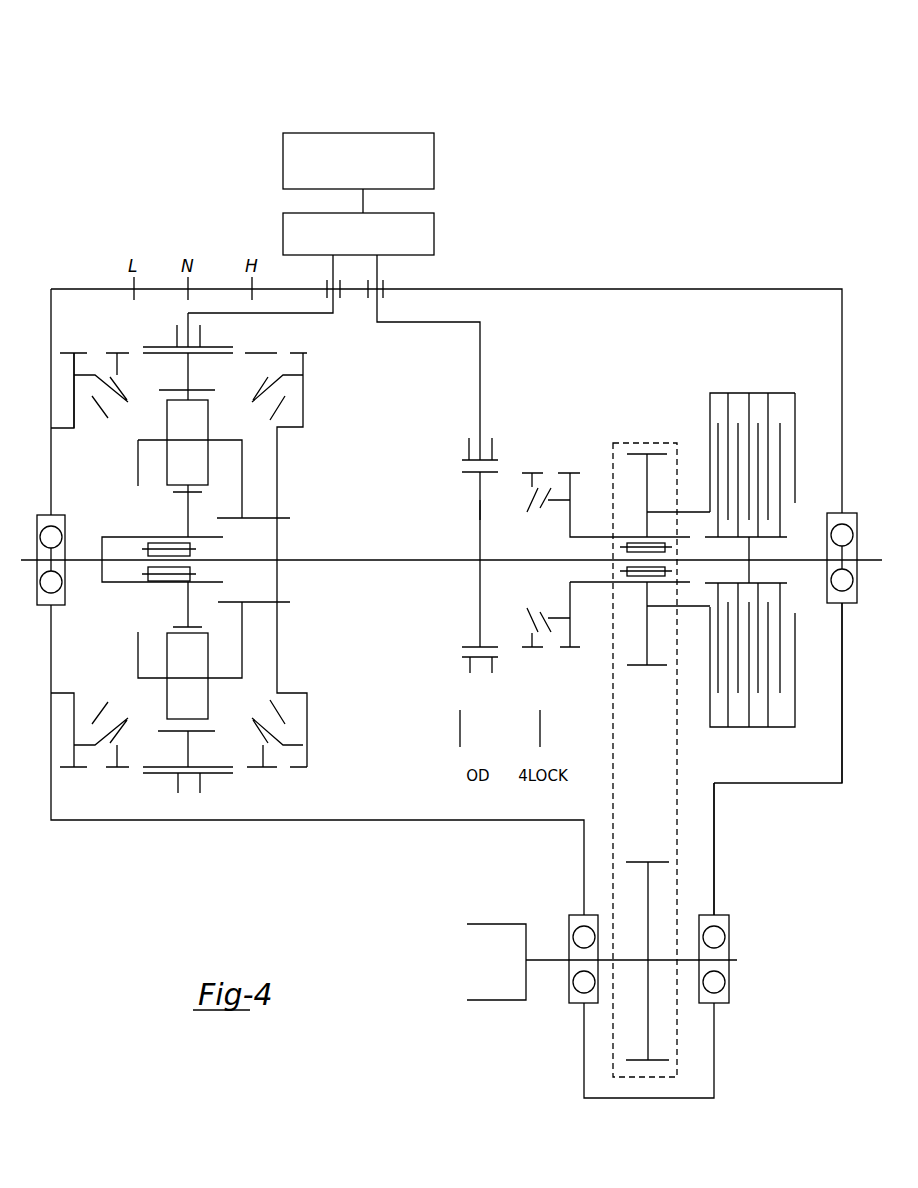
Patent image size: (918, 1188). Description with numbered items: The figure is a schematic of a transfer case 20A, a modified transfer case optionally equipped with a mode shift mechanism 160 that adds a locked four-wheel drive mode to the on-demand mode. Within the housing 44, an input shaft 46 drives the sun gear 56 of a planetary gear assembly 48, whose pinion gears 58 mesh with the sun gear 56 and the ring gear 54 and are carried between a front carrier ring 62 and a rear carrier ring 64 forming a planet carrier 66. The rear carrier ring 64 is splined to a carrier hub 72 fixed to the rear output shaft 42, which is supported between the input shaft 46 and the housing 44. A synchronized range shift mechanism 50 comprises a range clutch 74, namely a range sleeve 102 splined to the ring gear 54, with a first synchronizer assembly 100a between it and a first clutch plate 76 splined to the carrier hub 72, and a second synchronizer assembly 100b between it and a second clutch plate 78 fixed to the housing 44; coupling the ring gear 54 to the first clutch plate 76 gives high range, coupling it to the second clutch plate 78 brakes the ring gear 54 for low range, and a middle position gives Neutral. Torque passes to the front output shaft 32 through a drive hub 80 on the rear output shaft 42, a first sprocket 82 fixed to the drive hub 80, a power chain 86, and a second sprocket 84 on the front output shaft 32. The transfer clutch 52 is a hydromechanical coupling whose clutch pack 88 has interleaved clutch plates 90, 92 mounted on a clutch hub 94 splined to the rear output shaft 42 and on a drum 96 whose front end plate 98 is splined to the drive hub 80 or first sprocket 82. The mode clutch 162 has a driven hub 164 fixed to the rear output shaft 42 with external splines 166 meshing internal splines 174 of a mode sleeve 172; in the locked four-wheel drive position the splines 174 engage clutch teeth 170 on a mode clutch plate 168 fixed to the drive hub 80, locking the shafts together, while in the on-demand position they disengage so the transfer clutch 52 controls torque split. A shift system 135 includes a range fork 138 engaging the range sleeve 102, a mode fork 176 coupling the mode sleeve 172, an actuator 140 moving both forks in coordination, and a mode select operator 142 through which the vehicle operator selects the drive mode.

The transfer case 20A is at (638, 200).
The front output shaft 32 is at (550, 960).
The rear output shaft 42 is at (875, 558).
The housing 44 is at (770, 289).
The input shaft 46 is at (90, 562).
The planetary gear assembly 48 is at (135, 410).
The synchronized range shift mechanism 50 is at (106, 327).
The transfer clutch 52 is at (742, 378).
The ring gear 54 is at (205, 357).
The sun gear 56 is at (188, 510).
The pinion gears 58 is at (190, 425).
The front carrier ring 62 is at (138, 487).
The rear carrier ring 64 is at (240, 462).
The planet carrier 66 is at (135, 448).
The carrier hub 72 is at (277, 522).
The range clutch 74 is at (217, 340).
The first clutch plate 76 is at (277, 455).
The second clutch plate 78 is at (72, 367).
The drive hub 80 is at (588, 505).
The first sprocket 82 is at (647, 485).
The second sprocket 84 is at (648, 900).
The power chain 86 is at (678, 817).
The clutch pack 88 is at (740, 713).
The clutch plates 90 is at (780, 440).
The clutch plates 92 is at (754, 835).
The clutch hub 94 is at (861, 651).
The drum 96 is at (860, 714).
The front end plate 98 is at (708, 410).
The first synchronizer assembly 100a is at (280, 351).
The second synchronizer assembly 100b is at (90, 337).
The range sleeve 102 is at (150, 346).
The shift system 135 is at (413, 92).
The range fork 138 is at (283, 313).
The actuator 140 is at (425, 233).
The mode select operator 142 is at (434, 160).
The mode shift mechanism 160 is at (495, 425).
The mode clutch 162 is at (515, 445).
The driven hub 164 is at (481, 510).
The external splines 166 is at (463, 473).
The mode clutch plate 168 is at (578, 510).
The clutch teeth 170 is at (545, 647).
The mode sleeve 172 is at (462, 659).
The internal splines 174 is at (498, 659).
The mode fork 176 is at (480, 340).